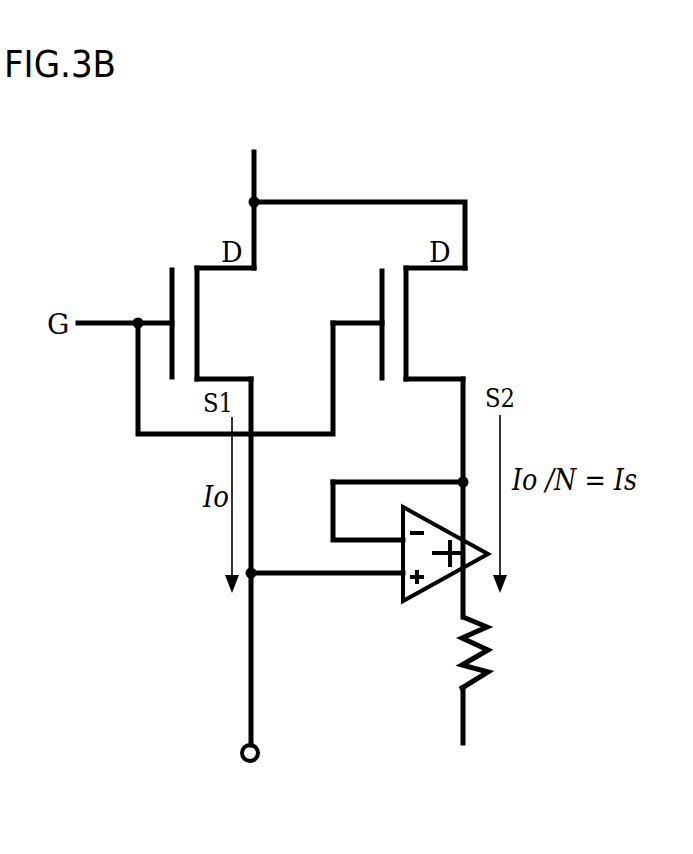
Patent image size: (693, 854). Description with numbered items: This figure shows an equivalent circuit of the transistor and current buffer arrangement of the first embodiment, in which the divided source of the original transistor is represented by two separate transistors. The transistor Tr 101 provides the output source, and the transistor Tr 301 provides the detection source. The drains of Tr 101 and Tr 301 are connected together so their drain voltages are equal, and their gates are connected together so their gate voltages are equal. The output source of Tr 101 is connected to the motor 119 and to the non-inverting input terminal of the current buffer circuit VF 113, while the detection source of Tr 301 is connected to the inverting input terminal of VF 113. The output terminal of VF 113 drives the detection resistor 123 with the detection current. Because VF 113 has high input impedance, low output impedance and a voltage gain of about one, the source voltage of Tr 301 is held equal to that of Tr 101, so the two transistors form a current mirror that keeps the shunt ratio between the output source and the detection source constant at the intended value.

The transistor Tr 101 is at (170, 266).
The transistor Tr 301 is at (477, 280).
The current buffer circuit VF 113 is at (423, 592).
The detection resistor 123 is at (490, 668).
The motor 119 is at (255, 773).